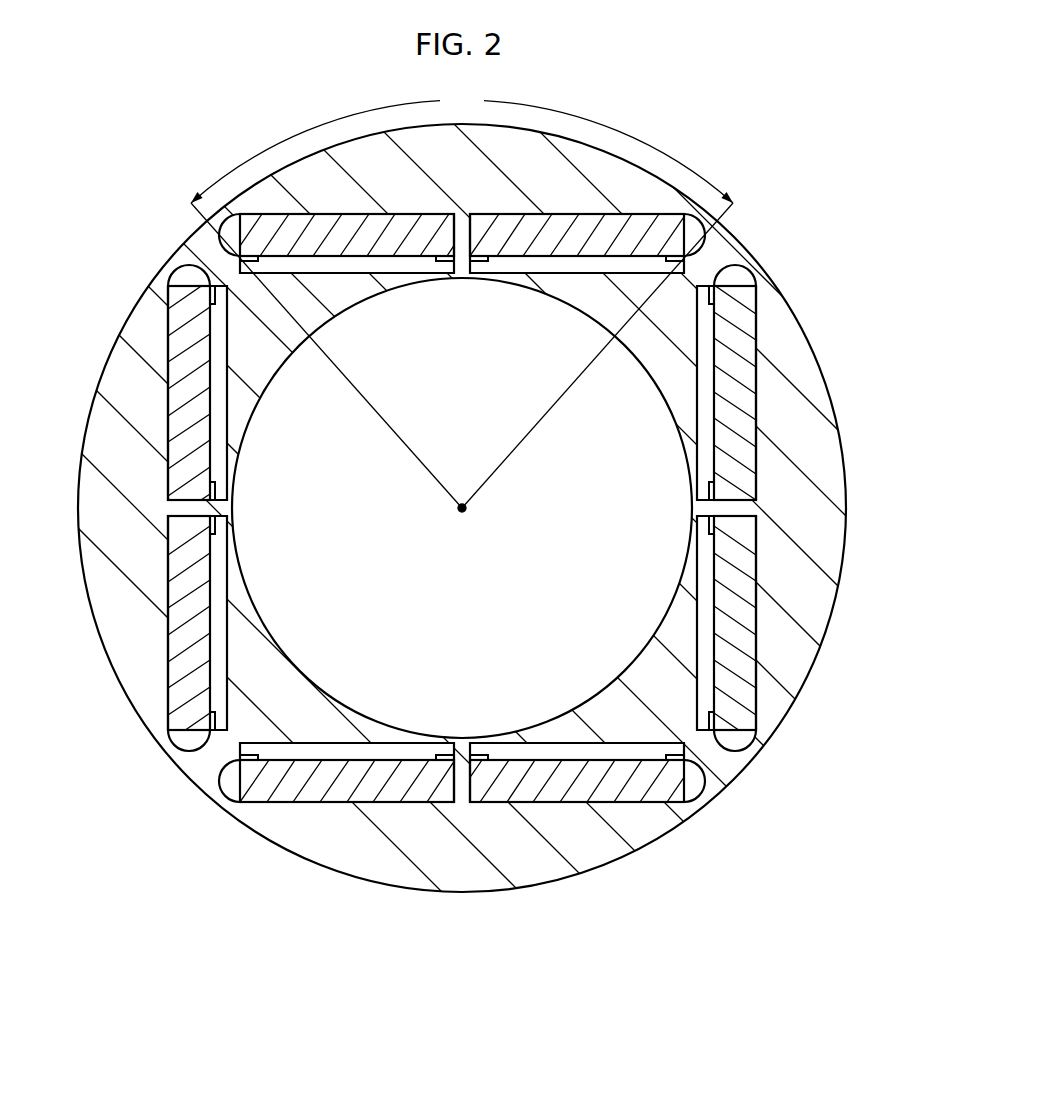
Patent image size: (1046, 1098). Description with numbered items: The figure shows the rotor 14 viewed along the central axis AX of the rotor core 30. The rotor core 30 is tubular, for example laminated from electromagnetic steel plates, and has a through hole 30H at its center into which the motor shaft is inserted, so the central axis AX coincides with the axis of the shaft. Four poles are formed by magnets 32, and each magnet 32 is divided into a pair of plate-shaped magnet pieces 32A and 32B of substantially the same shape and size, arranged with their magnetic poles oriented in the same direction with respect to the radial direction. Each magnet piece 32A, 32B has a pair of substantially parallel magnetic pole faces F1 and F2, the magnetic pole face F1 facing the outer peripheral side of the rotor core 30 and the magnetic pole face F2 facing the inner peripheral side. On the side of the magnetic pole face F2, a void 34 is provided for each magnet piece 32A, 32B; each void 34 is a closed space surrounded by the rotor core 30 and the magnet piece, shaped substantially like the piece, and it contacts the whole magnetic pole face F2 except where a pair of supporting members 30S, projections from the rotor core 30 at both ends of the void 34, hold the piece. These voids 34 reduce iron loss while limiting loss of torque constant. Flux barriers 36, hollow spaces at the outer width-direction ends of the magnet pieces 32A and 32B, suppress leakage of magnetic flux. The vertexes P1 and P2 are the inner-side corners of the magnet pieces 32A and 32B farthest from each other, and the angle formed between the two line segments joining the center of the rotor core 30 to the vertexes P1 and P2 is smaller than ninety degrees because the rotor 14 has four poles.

The rotor 14 is at (141, 124).
The rotor core 30 is at (592, 856).
The through hole 30H is at (341, 662).
The supporting members 30S is at (716, 299).
The magnet 32 is at (340, 137).
The magnet piece 32A is at (416, 240).
The magnet piece 32B is at (512, 240).
The void 34 is at (704, 305).
The flux barrier 36 is at (741, 278).
The magnetic pole face F1 is at (758, 338).
The magnetic pole face F2 is at (713, 372).
The vertex P1 is at (238, 257).
The vertex P2 is at (683, 255).
The central axis AX is at (458, 511).